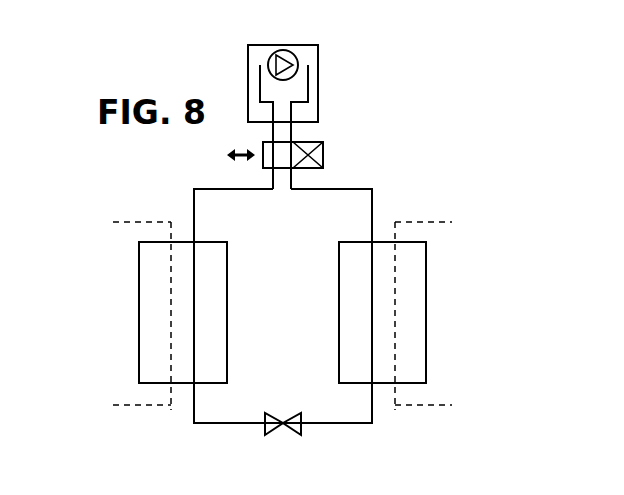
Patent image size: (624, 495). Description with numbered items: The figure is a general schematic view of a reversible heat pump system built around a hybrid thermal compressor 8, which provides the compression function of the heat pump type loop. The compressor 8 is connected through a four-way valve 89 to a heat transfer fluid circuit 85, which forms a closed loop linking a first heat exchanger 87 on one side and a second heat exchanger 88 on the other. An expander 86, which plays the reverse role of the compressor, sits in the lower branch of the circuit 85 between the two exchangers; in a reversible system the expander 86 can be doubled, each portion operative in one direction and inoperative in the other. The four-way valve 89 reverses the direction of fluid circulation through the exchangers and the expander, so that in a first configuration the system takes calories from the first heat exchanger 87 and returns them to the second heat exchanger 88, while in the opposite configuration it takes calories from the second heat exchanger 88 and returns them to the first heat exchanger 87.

The hybrid thermal compressor 8 is at (331, 78).
The four-way valve 89 is at (324, 147).
The heat transfer fluid circuit 85 is at (373, 202).
The first heat exchanger 87 is at (137, 294).
The second heat exchanger 88 is at (428, 293).
The expander 86 is at (281, 410).